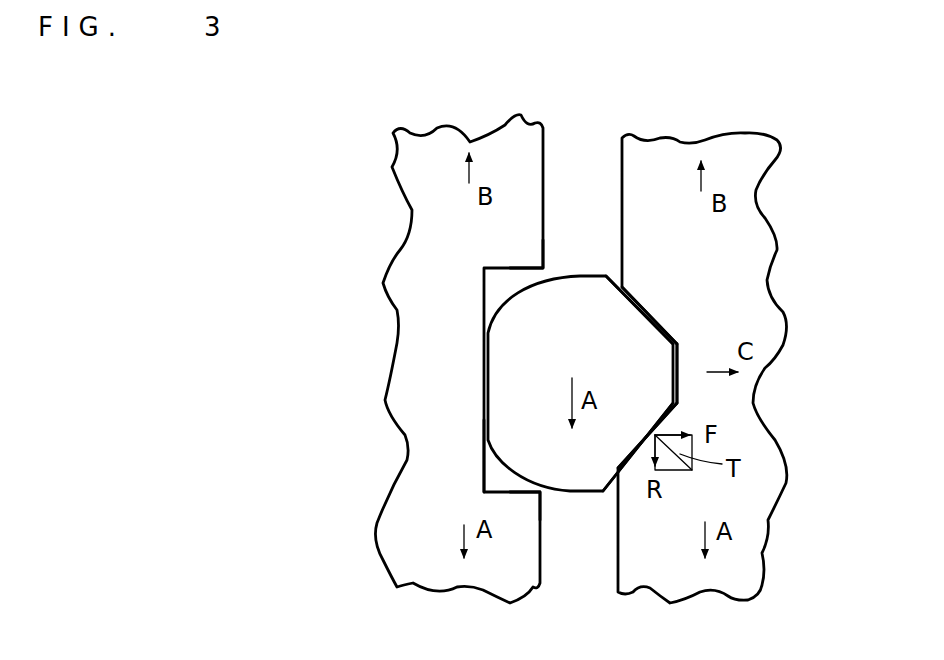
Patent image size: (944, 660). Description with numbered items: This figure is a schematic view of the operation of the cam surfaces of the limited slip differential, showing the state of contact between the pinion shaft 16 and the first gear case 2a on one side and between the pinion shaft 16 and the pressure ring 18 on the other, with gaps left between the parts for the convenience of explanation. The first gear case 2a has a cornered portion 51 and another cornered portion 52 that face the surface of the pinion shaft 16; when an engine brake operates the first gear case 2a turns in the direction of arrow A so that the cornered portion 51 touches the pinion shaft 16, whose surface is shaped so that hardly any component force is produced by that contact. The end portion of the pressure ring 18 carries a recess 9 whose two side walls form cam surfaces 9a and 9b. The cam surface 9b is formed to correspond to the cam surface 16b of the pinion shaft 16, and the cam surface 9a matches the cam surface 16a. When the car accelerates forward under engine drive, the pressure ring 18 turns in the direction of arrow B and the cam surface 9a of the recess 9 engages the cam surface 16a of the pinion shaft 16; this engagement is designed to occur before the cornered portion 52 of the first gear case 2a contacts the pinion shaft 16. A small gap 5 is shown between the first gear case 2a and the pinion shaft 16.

The first gear case 2a is at (388, 224).
The gap 5 is at (488, 469).
The cornered portion 51 is at (546, 265).
The cornered portion 52 is at (550, 492).
The pinion shaft 16 is at (572, 493).
The cam surface 16a is at (628, 468).
The cam surface 16b is at (653, 326).
The pressure ring 18 is at (795, 200).
The recess 9 is at (676, 359).
The cam surface 9a is at (678, 401).
The cam surface 9b is at (660, 328).